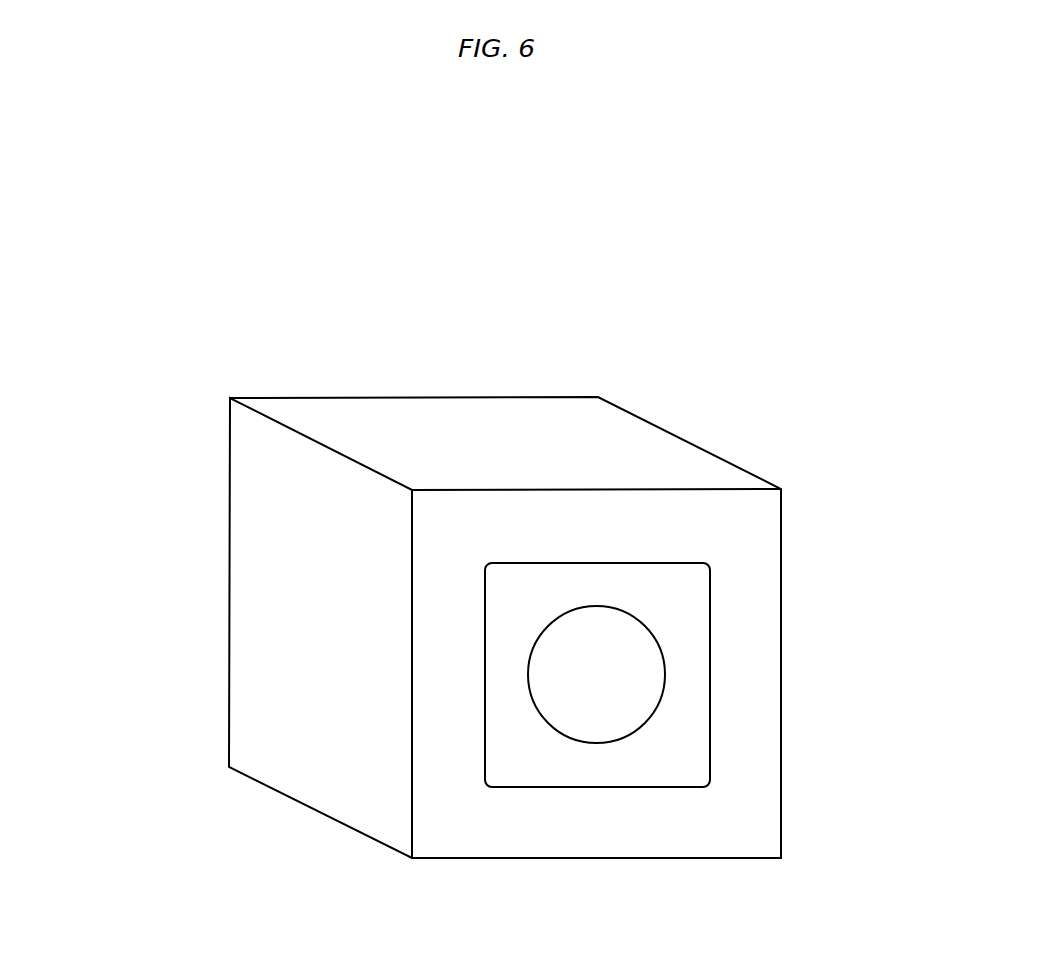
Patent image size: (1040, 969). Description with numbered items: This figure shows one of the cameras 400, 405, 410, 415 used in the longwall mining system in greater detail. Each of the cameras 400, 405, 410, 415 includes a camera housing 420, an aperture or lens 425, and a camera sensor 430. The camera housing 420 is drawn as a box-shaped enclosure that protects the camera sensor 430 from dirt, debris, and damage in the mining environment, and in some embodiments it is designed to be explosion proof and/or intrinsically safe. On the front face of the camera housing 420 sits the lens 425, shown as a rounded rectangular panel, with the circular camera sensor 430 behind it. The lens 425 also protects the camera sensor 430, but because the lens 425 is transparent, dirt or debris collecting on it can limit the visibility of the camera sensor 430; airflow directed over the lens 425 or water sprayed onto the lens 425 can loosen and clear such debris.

The camera 400 is at (619, 497).
The camera 405 is at (619, 497).
The camera 410 is at (619, 497).
The camera 415 is at (795, 188).
The camera housing 420 is at (717, 453).
The lens 425 is at (710, 654).
The camera sensor 430 is at (596, 607).